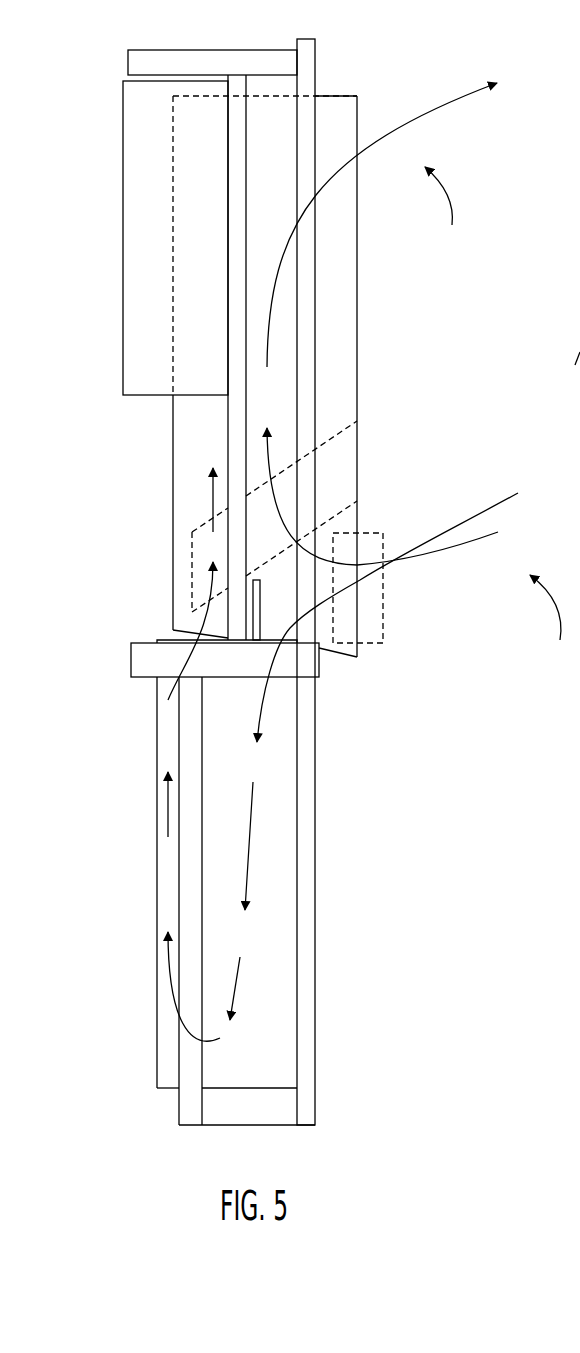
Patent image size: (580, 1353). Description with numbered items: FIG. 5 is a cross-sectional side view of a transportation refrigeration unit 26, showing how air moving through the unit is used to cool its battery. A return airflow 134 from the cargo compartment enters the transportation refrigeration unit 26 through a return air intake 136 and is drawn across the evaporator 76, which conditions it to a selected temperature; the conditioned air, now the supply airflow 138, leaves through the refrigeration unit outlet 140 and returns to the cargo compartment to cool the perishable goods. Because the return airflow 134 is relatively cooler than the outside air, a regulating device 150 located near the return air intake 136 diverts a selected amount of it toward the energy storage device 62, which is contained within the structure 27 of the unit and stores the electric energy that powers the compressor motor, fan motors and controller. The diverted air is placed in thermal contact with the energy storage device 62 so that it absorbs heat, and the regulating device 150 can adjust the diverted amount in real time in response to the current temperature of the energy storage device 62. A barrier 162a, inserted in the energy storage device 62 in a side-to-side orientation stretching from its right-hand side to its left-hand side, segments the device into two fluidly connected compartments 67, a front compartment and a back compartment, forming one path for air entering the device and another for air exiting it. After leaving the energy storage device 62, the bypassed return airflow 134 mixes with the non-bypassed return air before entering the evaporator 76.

The transportation refrigeration unit 26 is at (70, 291).
The structure 27 is at (188, 60).
The energy storage device 62 is at (218, 848).
The compartments 67 is at (571, 374).
The evaporator 76 is at (338, 462).
The return airflow 134 is at (503, 503).
The return air intake 136 is at (552, 626).
The supply airflow 138 is at (447, 102).
The refrigeration unit outlet 140 is at (446, 216).
The regulating device 150 is at (383, 643).
The barrier 162a is at (262, 614).